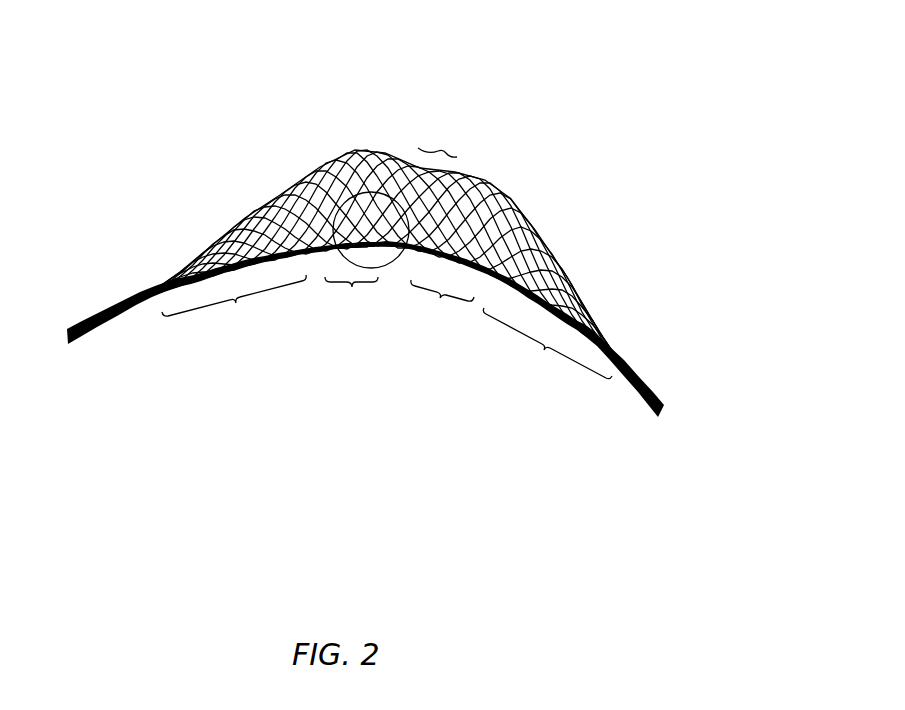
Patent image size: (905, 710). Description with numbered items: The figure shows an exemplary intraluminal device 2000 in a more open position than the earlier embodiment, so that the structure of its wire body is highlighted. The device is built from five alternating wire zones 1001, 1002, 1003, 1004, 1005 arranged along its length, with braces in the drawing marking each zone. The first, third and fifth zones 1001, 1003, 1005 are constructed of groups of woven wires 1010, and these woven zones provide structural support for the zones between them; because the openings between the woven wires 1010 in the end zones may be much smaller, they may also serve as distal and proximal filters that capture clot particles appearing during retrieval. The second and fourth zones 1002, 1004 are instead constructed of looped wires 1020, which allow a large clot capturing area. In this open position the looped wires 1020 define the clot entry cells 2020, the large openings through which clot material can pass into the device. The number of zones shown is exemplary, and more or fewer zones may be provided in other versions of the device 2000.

The intraluminal device 2000 is at (459, 291).
The clot entry cells 2020 is at (365, 227).
The woven wires 1010 is at (228, 235).
The looped wires 1020 is at (375, 197).
The wire zone 1003 is at (452, 138).
The wire zone 1001 is at (232, 318).
The wire zone 1002 is at (355, 304).
The wire zone 1004 is at (440, 321).
The wire zone 1005 is at (547, 375).